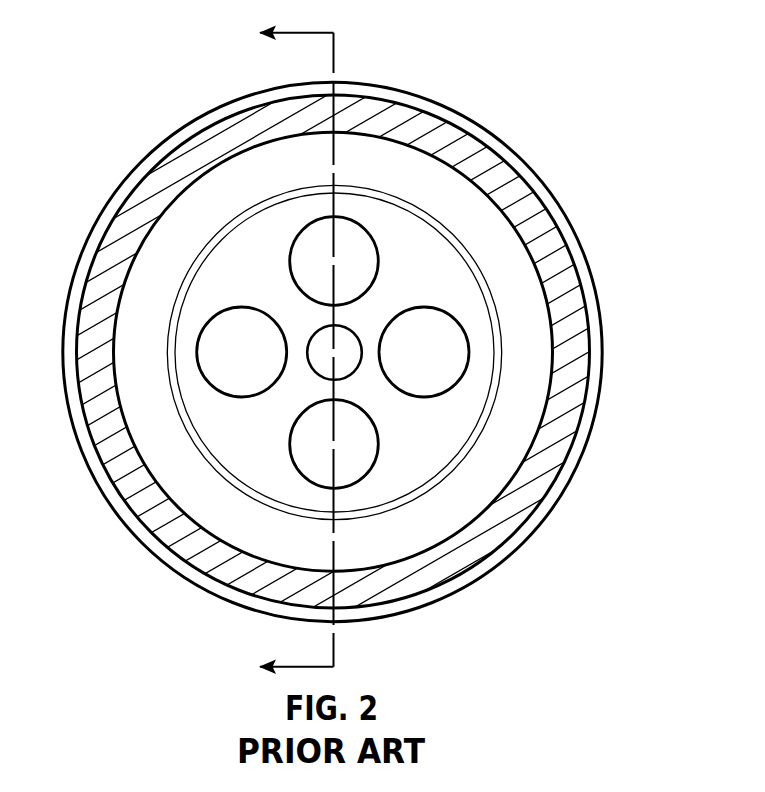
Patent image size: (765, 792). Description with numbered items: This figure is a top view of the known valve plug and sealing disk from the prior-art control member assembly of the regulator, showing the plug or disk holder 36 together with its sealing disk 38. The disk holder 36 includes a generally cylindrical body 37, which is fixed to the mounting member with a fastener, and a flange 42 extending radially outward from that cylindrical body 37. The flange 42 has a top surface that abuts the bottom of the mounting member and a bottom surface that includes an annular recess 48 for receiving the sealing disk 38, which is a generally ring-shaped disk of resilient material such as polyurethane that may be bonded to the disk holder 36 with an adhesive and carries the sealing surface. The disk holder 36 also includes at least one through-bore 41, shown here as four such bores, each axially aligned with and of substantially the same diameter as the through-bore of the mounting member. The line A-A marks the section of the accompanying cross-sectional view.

The disk holder 36 is at (350, 396).
The cylindrical body 37 is at (473, 483).
The sealing disk 38 is at (570, 350).
The through-bore 41 is at (365, 226).
The flange 42 is at (582, 465).
The annular recess 48 is at (585, 422).